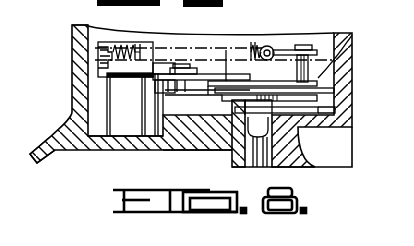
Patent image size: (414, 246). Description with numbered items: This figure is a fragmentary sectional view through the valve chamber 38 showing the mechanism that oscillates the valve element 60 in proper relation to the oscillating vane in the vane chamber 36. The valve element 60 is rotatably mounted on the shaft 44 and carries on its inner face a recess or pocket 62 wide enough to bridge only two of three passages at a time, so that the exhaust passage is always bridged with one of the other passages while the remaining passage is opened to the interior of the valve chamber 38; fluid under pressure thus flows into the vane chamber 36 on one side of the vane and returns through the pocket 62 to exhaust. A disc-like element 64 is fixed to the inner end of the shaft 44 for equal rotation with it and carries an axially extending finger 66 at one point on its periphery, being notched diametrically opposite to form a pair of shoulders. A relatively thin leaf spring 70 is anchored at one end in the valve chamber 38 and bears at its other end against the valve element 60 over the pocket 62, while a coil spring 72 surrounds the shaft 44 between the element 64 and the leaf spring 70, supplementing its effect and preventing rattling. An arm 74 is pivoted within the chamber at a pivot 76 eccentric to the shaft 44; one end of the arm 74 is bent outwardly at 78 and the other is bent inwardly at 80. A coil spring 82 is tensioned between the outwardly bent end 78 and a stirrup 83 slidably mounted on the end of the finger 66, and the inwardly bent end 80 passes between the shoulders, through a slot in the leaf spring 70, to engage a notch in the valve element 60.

The vane chamber 36 is at (50, 153).
The valve chamber 38 is at (88, 33).
The shaft 44 is at (37, 163).
The valve element 60 is at (325, 147).
The recess or pocket 62 is at (353, 92).
The disc-like element 64 is at (352, 57).
The finger 66 is at (353, 35).
The leaf spring 70 is at (353, 73).
The coil spring 72 is at (266, 78).
The arm 74 is at (120, 79).
The pivot 76 is at (178, 64).
The outwardly bent end 78 is at (97, 62).
The inwardly bent end 80 is at (226, 50).
The coil spring 82 is at (130, 42).
The stirrup 83 is at (278, 49).